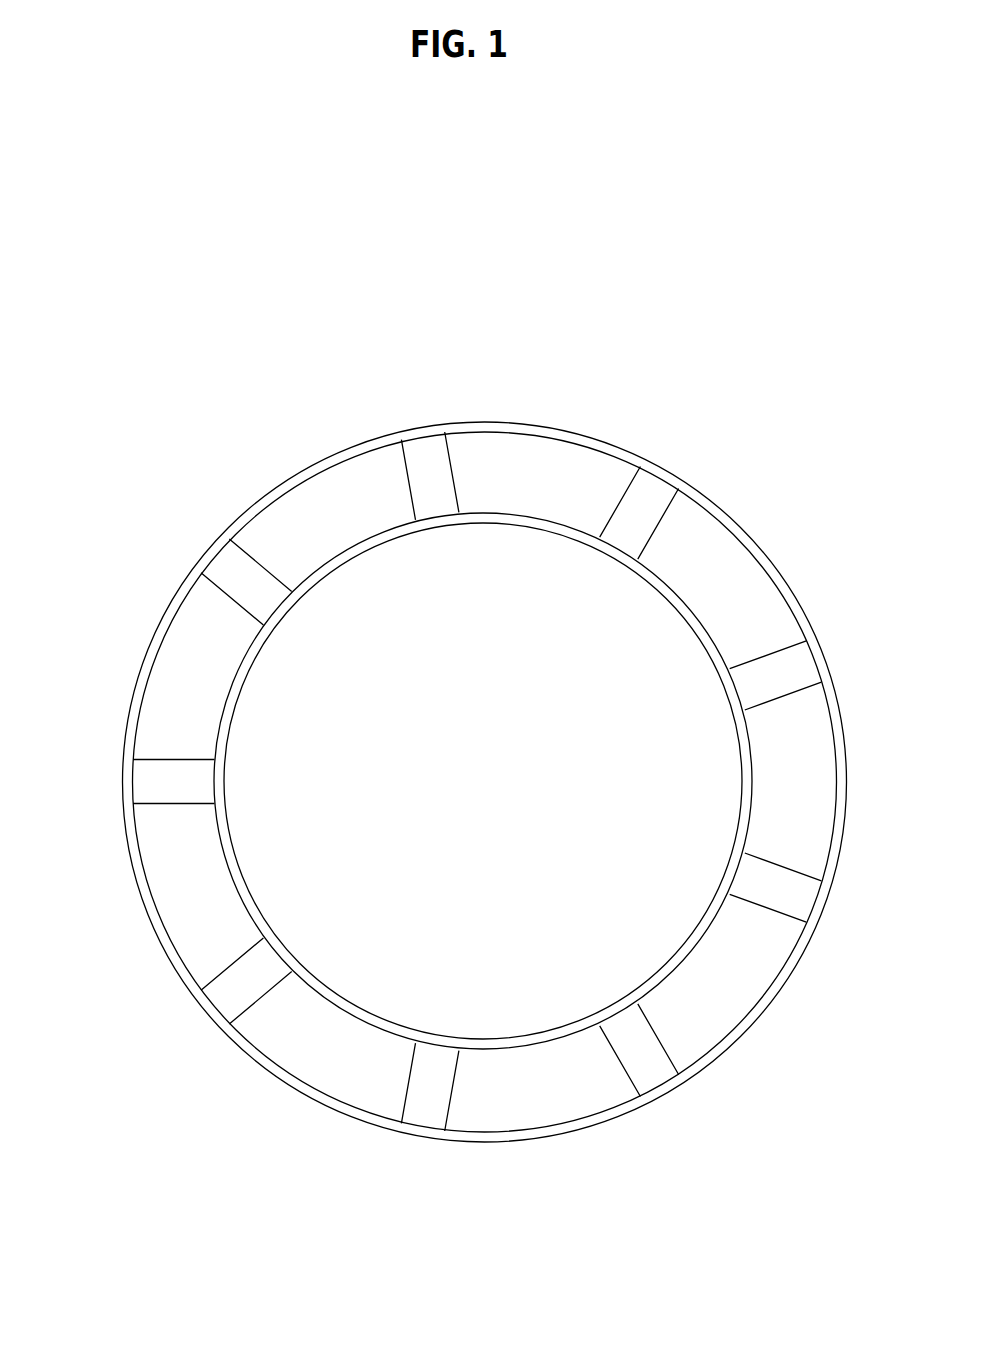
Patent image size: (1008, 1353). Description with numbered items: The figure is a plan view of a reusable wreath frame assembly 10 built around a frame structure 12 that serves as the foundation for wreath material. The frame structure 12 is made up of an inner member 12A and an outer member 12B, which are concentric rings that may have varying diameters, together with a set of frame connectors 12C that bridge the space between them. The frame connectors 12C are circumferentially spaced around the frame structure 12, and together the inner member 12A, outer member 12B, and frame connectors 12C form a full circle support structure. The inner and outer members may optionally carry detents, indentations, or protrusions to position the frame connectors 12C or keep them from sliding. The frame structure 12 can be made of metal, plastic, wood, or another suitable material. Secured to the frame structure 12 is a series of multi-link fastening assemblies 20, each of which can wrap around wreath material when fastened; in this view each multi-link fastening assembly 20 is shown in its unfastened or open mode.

The reusable wreath frame assembly 10 is at (617, 249).
The frame structure 12 is at (784, 1069).
The inner member 12A is at (530, 1036).
The outer member 12B is at (541, 1138).
The frame connectors 12C is at (643, 510).
The multi-link fastening assembly 20 is at (207, 1046).